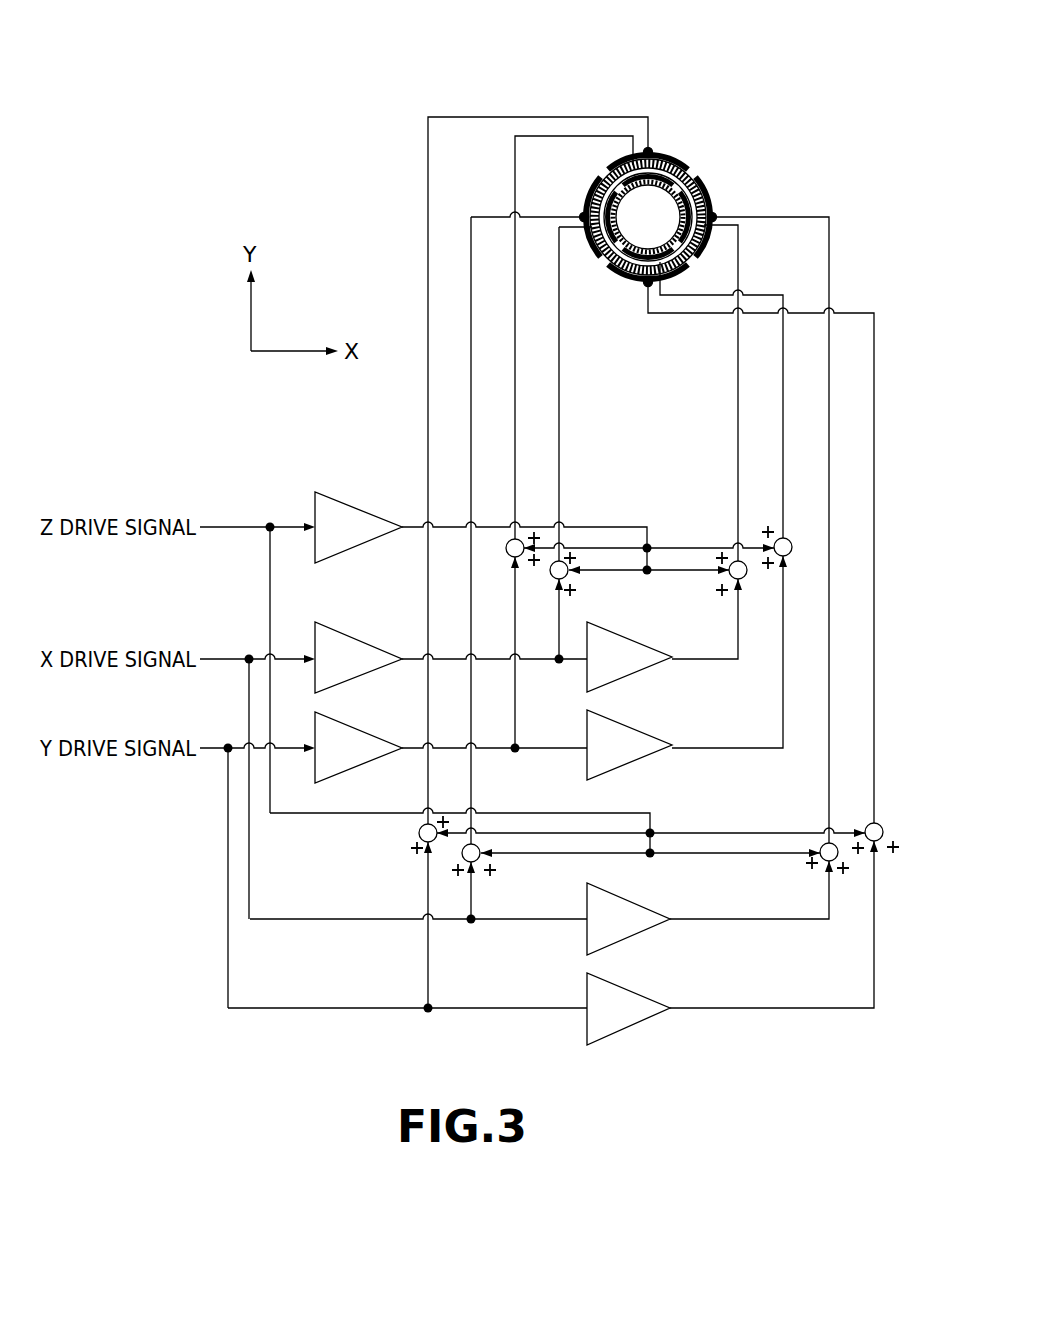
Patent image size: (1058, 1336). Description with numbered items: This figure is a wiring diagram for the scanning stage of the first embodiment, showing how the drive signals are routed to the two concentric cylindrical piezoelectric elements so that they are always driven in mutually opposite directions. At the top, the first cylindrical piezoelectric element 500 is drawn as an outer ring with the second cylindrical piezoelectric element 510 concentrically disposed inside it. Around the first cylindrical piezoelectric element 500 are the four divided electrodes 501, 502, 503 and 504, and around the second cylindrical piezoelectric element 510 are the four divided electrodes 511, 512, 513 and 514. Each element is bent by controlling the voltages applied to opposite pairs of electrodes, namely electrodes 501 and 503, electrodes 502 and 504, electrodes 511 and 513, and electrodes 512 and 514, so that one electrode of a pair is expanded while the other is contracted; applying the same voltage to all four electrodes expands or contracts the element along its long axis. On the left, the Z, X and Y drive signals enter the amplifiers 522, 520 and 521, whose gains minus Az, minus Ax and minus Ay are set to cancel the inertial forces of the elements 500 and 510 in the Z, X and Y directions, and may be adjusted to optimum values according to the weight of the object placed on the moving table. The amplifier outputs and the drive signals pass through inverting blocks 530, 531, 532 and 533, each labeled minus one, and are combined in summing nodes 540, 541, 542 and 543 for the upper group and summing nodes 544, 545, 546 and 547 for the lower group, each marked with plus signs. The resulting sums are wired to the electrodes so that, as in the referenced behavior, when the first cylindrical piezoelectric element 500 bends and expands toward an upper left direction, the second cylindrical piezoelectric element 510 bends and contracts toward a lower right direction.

The first cylindrical piezoelectric element 500 is at (688, 170).
The electrode 501 is at (714, 197).
The electrode 502 is at (657, 283).
The electrode 503 is at (582, 190).
The electrode 504 is at (662, 152).
The second cylindrical piezoelectric element 510 is at (617, 176).
The electrode 511 is at (695, 192).
The electrode 512 is at (627, 266).
The electrode 513 is at (610, 240).
The electrode 514 is at (633, 170).
The amplifier 520 is at (348, 636).
The amplifier 521 is at (348, 724).
The amplifier 522 is at (350, 506).
The inverter -1 530 is at (610, 632).
The inverter -1 531 is at (620, 724).
The inverter -1 532 is at (621, 897).
The inverter -1 533 is at (630, 988).
The adder 540 is at (566, 559).
The adder 541 is at (737, 560).
The adder 542 is at (520, 539).
The adder 543 is at (779, 538).
The adder 544 is at (478, 845).
The adder 545 is at (823, 845).
The adder 546 is at (436, 824).
The adder 547 is at (868, 826).